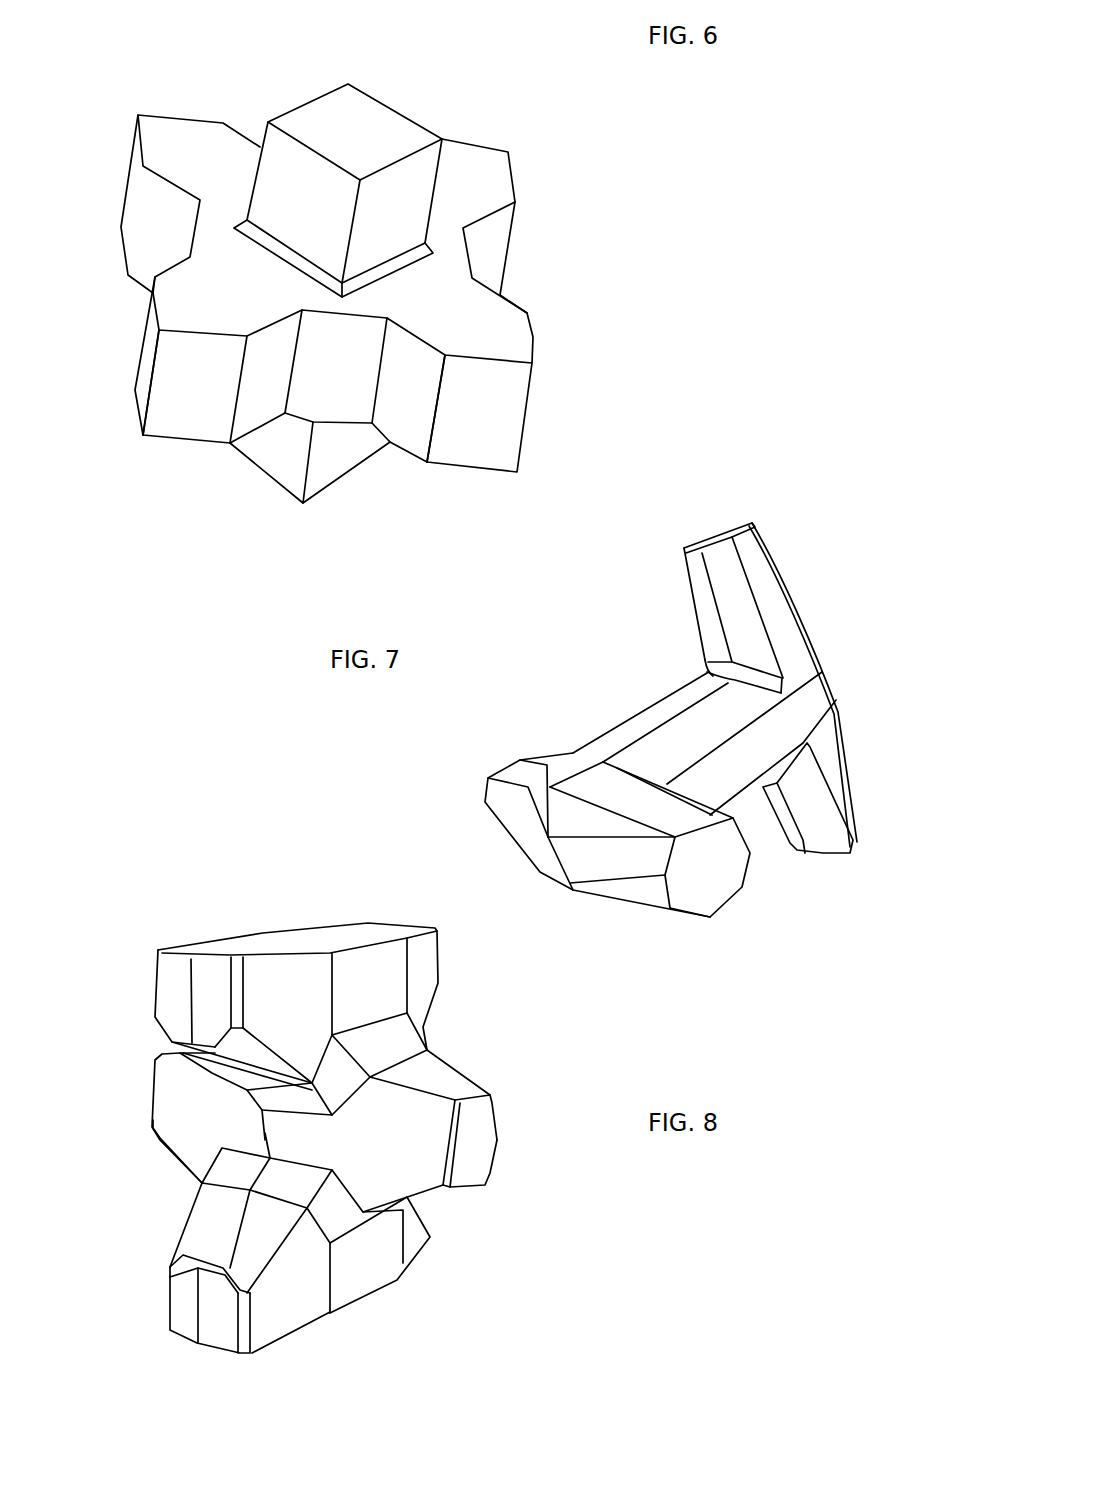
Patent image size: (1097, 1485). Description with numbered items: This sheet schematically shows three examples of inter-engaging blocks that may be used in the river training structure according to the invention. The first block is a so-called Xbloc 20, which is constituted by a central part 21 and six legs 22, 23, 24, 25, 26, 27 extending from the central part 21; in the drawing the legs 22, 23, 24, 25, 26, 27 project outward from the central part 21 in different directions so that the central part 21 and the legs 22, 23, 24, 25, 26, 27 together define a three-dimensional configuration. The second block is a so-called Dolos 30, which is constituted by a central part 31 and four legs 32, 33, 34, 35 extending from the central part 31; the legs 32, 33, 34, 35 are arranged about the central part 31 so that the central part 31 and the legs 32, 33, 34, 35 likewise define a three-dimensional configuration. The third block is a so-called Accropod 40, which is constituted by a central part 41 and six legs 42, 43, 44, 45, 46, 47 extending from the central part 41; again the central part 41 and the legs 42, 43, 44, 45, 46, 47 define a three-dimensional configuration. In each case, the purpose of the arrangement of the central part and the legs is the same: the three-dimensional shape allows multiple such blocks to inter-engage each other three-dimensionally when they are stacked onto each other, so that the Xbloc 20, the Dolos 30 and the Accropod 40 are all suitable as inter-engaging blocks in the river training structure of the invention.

In FIG. 6, the Xbloc 20 is at (376, 330).
In FIG. 6, the central part 21 is at (335, 347).
In FIG. 6, the leg 22 is at (413, 195).
In FIG. 6, the leg 23 is at (352, 455).
In FIG. 6, the leg 24 is at (492, 410).
In FIG. 6, the leg 25 is at (170, 135).
In FIG. 6, the leg 26 is at (190, 405).
In FIG. 6, the leg 27 is at (490, 162).
In FIG. 7, the Dolos 30 is at (607, 722).
In FIG. 7, the central part 31 is at (682, 723).
In FIG. 7, the leg 32 is at (767, 570).
In FIG. 7, the leg 33 is at (822, 836).
In FIG. 7, the leg 34 is at (505, 787).
In FIG. 7, the leg 35 is at (683, 895).
In FIG. 8, the Accropod 40 is at (363, 1109).
In FIG. 8, the central part 41 is at (285, 1137).
In FIG. 8, the leg 42 is at (158, 1093).
In FIG. 8, the leg 43 is at (417, 1185).
In FIG. 8, the leg 44 is at (430, 970).
In FIG. 8, the leg 45 is at (162, 970).
In FIG. 8, the leg 46 is at (270, 1330).
In FIG. 8, the leg 47 is at (417, 1235).